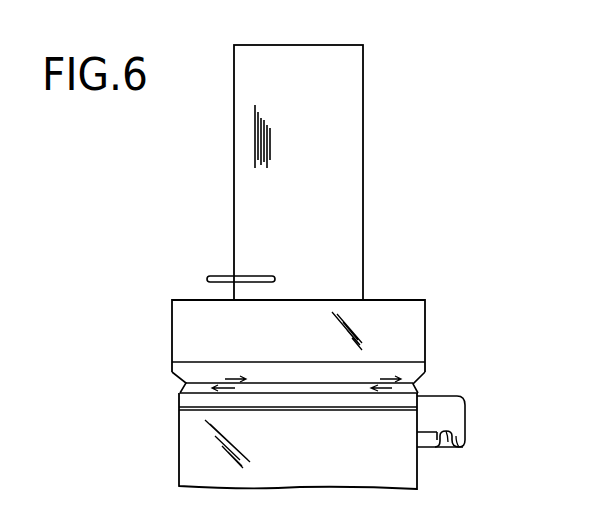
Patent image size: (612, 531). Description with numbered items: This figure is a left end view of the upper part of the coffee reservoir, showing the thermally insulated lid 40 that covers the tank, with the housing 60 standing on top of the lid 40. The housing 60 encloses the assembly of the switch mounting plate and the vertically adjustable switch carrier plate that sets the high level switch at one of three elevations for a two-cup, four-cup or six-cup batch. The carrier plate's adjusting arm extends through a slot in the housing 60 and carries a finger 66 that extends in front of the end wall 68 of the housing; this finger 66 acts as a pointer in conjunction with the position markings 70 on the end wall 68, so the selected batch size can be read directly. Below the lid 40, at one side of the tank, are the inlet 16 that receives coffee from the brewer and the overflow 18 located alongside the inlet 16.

The housing 60 is at (363, 93).
The end wall 68 is at (249, 194).
The position markings 70 is at (346, 169).
The finger 66 is at (257, 283).
The lid 40 is at (414, 340).
The inlet 16 is at (458, 391).
The overflow 18 is at (432, 440).